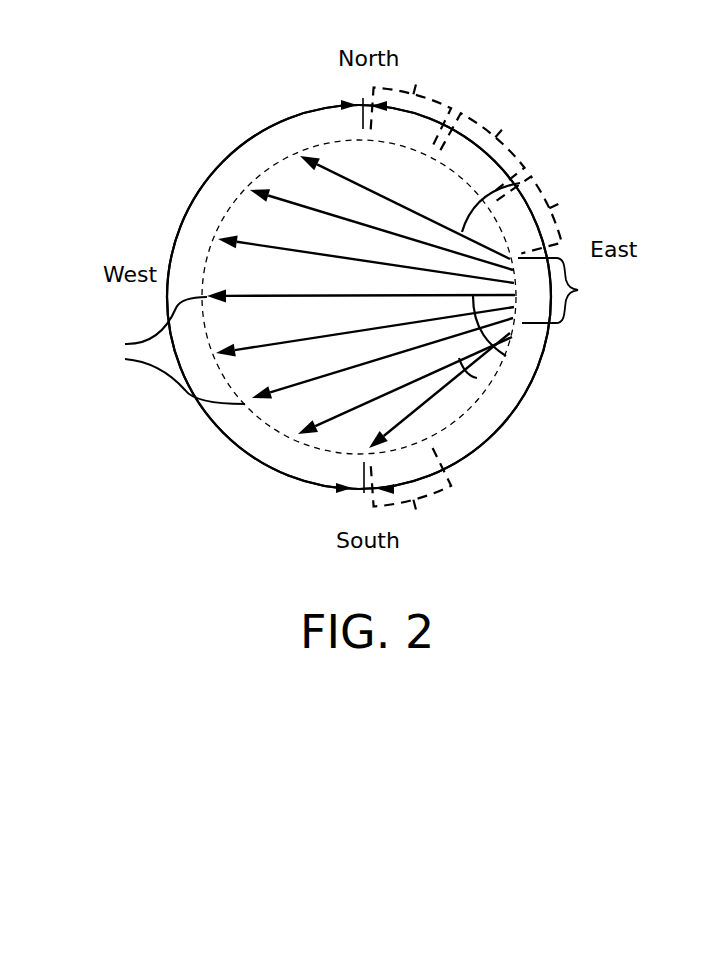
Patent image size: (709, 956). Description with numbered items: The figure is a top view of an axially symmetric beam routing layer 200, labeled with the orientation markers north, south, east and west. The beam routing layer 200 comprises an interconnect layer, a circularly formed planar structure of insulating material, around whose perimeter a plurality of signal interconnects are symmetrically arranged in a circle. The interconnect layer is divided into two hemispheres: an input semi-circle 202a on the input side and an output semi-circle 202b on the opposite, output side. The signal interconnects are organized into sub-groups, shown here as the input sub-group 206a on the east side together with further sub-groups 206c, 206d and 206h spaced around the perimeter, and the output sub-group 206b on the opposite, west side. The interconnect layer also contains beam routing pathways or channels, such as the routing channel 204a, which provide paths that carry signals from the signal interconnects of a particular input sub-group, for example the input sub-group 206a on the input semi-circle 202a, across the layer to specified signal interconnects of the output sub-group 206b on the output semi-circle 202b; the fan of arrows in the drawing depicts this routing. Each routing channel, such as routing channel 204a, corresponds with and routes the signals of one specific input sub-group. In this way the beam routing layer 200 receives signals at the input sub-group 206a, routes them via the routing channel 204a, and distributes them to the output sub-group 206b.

The beam routing layer 200 is at (196, 97).
The input semi-circle 202a is at (458, 462).
The output semi-circle 202b is at (188, 218).
The routing channel 204a is at (520, 183).
The input sub-group 206a is at (578, 290).
The output sub-group 206b is at (417, 81).
The input sub-group 206c is at (504, 127).
The input sub-group 206d is at (562, 202).
The input sub-group 206h is at (417, 513).